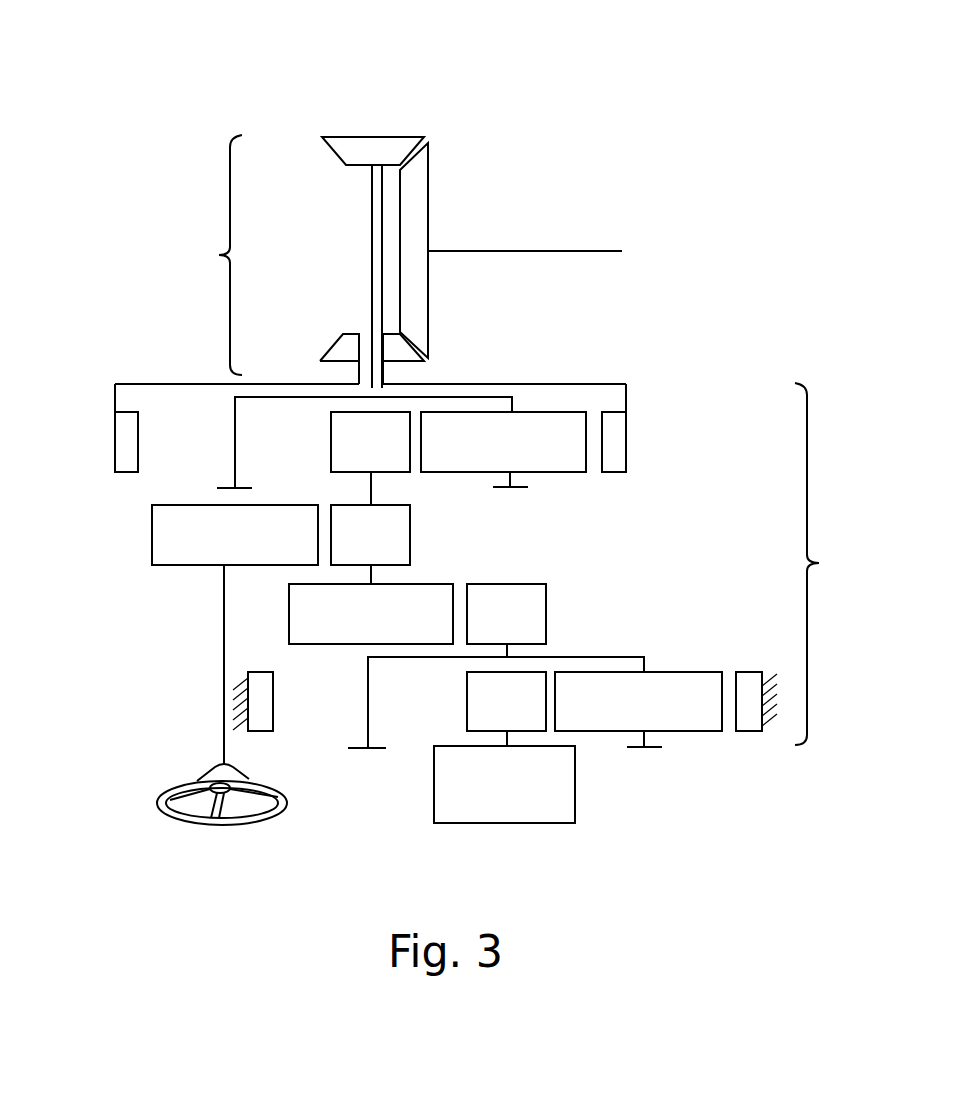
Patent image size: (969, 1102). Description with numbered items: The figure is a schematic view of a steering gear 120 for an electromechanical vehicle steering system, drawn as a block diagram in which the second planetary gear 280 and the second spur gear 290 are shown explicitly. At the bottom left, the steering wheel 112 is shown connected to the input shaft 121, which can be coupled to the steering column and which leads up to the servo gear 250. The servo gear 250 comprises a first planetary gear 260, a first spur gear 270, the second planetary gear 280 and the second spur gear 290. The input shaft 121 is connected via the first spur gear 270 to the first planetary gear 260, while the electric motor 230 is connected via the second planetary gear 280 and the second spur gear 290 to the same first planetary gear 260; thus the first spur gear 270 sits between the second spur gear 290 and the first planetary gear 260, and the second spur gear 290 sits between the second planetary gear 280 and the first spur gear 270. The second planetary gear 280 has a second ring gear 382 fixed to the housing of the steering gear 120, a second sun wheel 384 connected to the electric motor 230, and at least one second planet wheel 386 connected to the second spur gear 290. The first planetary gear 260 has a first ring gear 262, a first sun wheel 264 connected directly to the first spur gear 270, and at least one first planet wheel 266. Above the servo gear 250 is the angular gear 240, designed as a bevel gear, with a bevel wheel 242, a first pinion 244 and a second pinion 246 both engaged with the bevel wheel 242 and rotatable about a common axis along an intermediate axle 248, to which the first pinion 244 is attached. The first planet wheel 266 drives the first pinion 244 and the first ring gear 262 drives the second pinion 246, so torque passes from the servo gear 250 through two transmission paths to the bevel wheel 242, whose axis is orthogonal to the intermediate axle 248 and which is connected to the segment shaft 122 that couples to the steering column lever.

The steering gear 120 is at (112, 85).
The angular gear 240 is at (207, 255).
The first pinion 244 is at (335, 137).
The bevel wheel 242 is at (428, 287).
The intermediate axle 248 is at (370, 245).
The second pinion 246 is at (333, 343).
The segment shaft 122 is at (585, 249).
The first ring gear 262 is at (115, 440).
The first planetary gear 260 is at (652, 443).
The first sun wheel 264 is at (370, 442).
The first planet wheel 266 is at (503, 449).
The first spur gear 270 is at (133, 531).
The second spur gear 290 is at (566, 611).
The second planetary gear 280 is at (706, 650).
The second sun wheel 384 is at (506, 709).
The second planet wheel 386 is at (638, 709).
The electric motor 230 is at (504, 784).
The second ring gear 382 is at (745, 732).
The servo gear 250 is at (834, 564).
The input shaft 121 is at (222, 720).
The steering wheel 112 is at (160, 803).